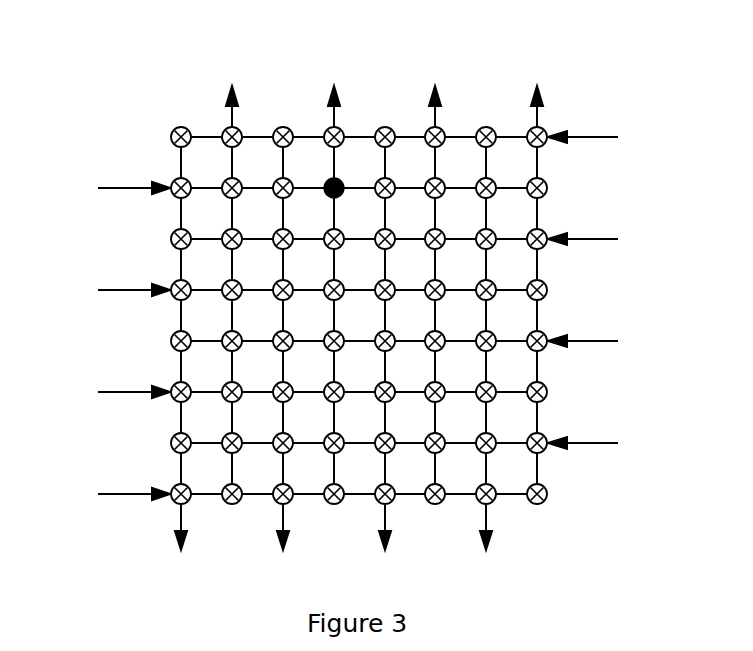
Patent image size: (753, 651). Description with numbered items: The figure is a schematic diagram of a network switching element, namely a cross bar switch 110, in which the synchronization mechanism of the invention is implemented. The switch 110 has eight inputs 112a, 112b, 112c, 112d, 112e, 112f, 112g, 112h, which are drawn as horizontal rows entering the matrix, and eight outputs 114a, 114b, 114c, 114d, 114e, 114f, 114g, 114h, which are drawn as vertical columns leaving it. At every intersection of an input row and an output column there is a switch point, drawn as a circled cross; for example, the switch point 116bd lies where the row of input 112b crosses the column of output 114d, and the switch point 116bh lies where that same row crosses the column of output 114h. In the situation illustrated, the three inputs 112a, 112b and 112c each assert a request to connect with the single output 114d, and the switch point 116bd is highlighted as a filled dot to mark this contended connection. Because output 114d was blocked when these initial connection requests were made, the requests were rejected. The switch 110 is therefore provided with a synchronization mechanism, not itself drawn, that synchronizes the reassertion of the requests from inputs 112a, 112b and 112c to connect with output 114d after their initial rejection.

The cross bar switch 110 is at (387, 303).
The input 112a is at (415, 130).
The input 112b is at (302, 183).
The input 112c is at (415, 233).
The input 112d is at (287, 290).
The input 112e is at (429, 345).
The input 112f is at (290, 395).
The input 112g is at (429, 446).
The input 112h is at (287, 496).
The output 114a is at (181, 363).
The output 114b is at (232, 273).
The output 114c is at (282, 363).
The output 114d is at (334, 273).
The output 114e is at (385, 363).
The output 114f is at (435, 273).
The output 114g is at (486, 363).
The output 114h is at (537, 273).
The switch point 116bd is at (318, 162).
The switch point 116bh is at (565, 185).